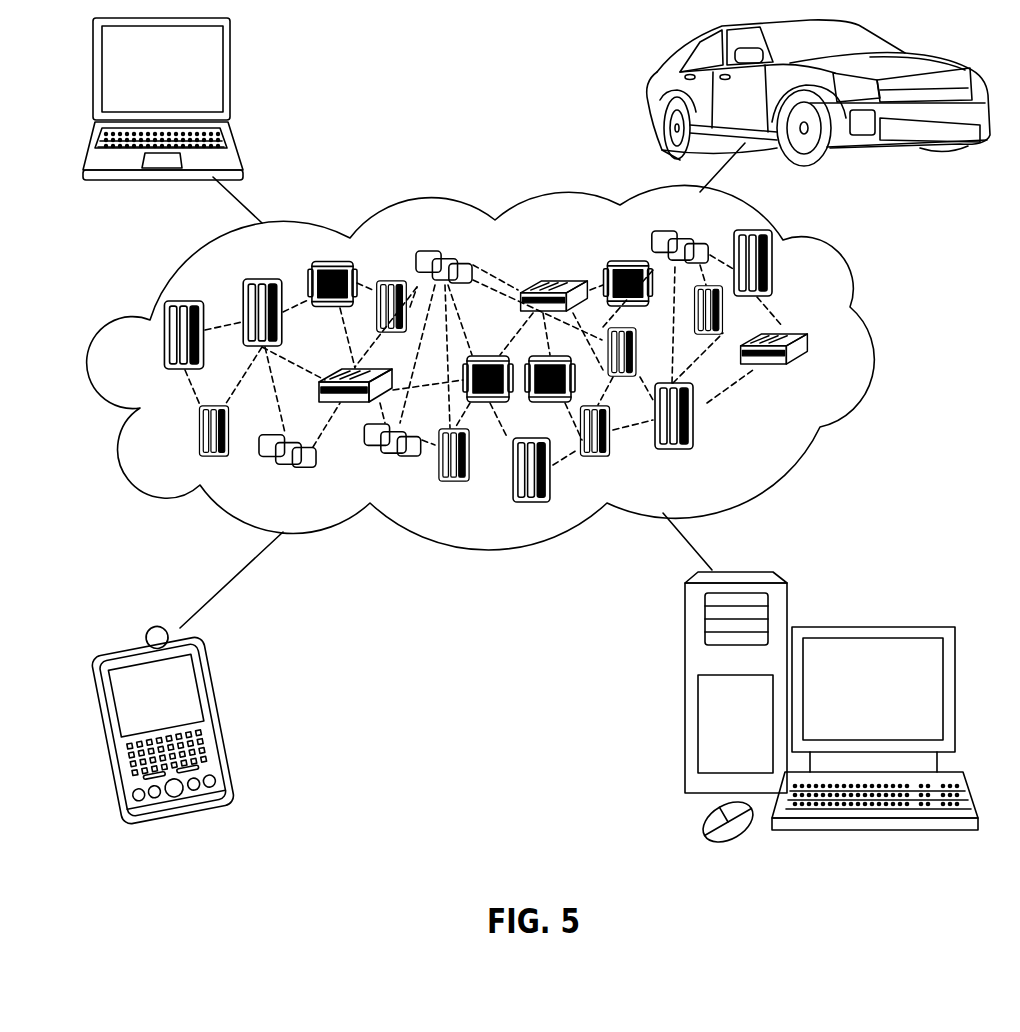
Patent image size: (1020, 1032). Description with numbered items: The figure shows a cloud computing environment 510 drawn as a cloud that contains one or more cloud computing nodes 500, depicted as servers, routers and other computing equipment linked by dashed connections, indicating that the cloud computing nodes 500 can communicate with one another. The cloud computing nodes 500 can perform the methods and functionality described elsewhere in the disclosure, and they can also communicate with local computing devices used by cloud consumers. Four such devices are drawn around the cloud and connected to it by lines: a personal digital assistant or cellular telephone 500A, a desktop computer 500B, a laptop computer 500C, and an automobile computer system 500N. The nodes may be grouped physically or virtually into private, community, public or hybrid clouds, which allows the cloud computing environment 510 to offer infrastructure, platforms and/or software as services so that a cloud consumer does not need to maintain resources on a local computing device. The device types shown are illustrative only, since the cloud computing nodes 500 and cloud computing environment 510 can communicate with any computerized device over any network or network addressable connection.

The cloud computing nodes 500 is at (550, 366).
The cloud computing environment 510 is at (870, 347).
The personal digital assistant (PDA) or cellular telephone 500A is at (222, 720).
The desktop computer 500B is at (870, 625).
The laptop computer 500C is at (232, 78).
The automobile computer system 500N is at (665, 106).